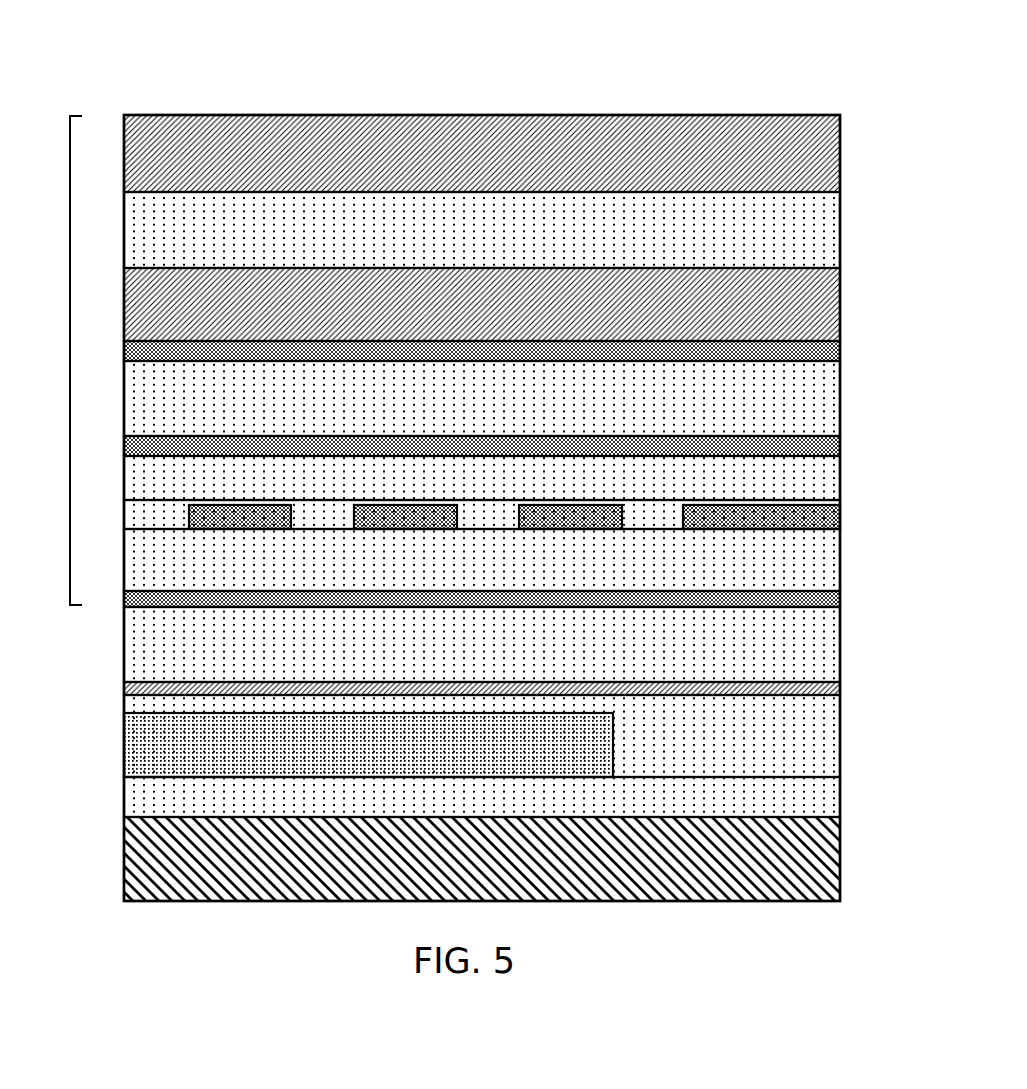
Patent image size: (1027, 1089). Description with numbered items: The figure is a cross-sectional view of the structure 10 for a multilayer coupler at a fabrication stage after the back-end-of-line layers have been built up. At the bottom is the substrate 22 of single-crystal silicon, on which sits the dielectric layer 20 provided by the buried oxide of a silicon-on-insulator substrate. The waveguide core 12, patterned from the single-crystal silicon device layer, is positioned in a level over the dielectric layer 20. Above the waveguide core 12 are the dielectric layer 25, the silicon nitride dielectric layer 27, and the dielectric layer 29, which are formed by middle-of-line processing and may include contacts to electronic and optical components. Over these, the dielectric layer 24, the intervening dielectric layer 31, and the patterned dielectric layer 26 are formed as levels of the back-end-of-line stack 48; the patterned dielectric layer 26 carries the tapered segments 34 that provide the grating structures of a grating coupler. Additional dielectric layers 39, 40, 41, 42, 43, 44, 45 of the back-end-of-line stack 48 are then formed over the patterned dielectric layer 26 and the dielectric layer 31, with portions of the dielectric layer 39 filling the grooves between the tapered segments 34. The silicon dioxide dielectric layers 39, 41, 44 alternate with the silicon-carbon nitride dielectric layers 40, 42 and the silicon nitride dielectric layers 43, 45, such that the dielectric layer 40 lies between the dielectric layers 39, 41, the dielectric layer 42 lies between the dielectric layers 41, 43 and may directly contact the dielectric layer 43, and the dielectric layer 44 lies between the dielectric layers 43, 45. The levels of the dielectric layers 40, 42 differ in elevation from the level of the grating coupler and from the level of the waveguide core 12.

The structure 10 is at (130, 76).
The waveguide core 12 is at (170, 750).
The dielectric layer 20 is at (803, 800).
The substrate 22 is at (808, 870).
The dielectric layer 24 is at (805, 603).
The dielectric layer 25 is at (482, 736).
The patterned dielectric layer 26 is at (505, 509).
The dielectric layer 27 is at (158, 690).
The dielectric layer 29 is at (808, 650).
The dielectric layer 31 is at (813, 560).
The tapered segments 34 is at (395, 515).
The dielectric layer 39 is at (810, 479).
The dielectric layer 40 is at (800, 445).
The dielectric layer 41 is at (800, 397).
The dielectric layer 42 is at (800, 355).
The dielectric layer 43 is at (808, 303).
The dielectric layer 44 is at (800, 222).
The dielectric layer 45 is at (800, 165).
The back-end-of-line stack 48 is at (70, 362).